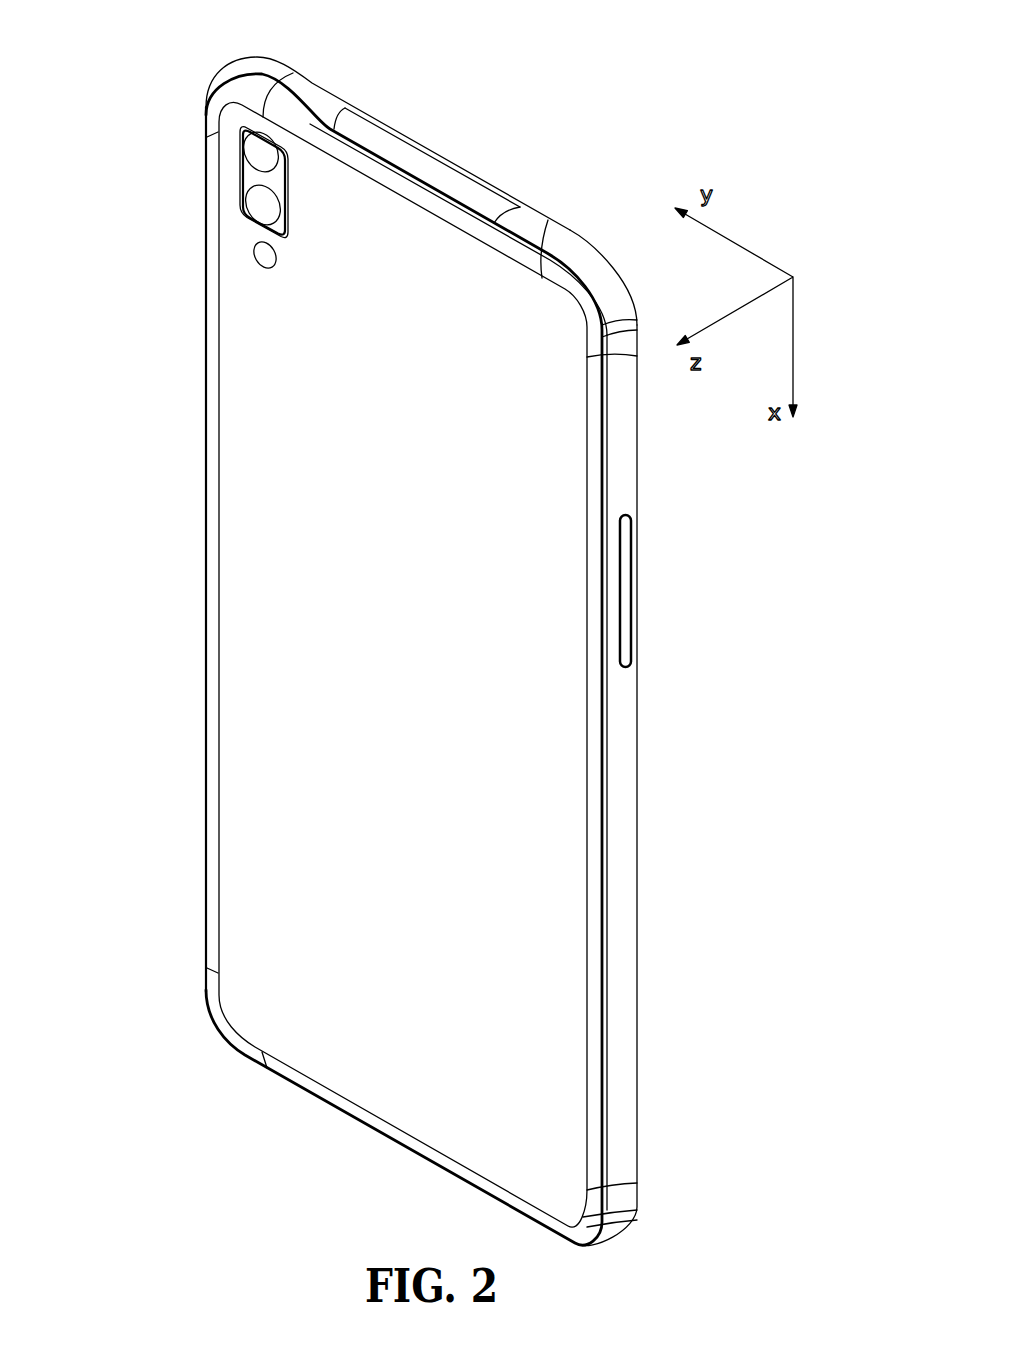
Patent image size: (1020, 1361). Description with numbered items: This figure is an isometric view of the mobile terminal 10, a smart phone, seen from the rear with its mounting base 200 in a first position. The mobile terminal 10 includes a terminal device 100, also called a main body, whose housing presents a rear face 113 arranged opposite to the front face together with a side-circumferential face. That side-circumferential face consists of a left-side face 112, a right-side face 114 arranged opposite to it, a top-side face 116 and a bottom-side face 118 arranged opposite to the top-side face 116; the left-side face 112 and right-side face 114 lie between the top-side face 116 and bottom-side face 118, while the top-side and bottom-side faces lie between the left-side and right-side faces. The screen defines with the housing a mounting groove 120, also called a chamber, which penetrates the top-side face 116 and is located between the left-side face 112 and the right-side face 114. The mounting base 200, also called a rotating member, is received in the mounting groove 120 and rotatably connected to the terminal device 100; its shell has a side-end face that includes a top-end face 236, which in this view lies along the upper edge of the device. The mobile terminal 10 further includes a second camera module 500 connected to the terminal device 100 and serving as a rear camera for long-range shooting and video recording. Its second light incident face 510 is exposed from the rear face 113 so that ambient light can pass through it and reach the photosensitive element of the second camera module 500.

The mobile terminal 10 is at (176, 103).
The terminal device 100 is at (196, 504).
The left-side face 112 is at (205, 692).
The rear face 113 is at (245, 828).
The right-side face 114 is at (631, 776).
The top-side face 116 is at (540, 236).
The bottom-side face 118 is at (355, 1122).
The mounting groove 120 is at (381, 110).
The mounting base 200 is at (452, 174).
The top-end face 236 is at (338, 116).
The second camera module 500 is at (257, 193).
The second light incident face 510 is at (258, 212).